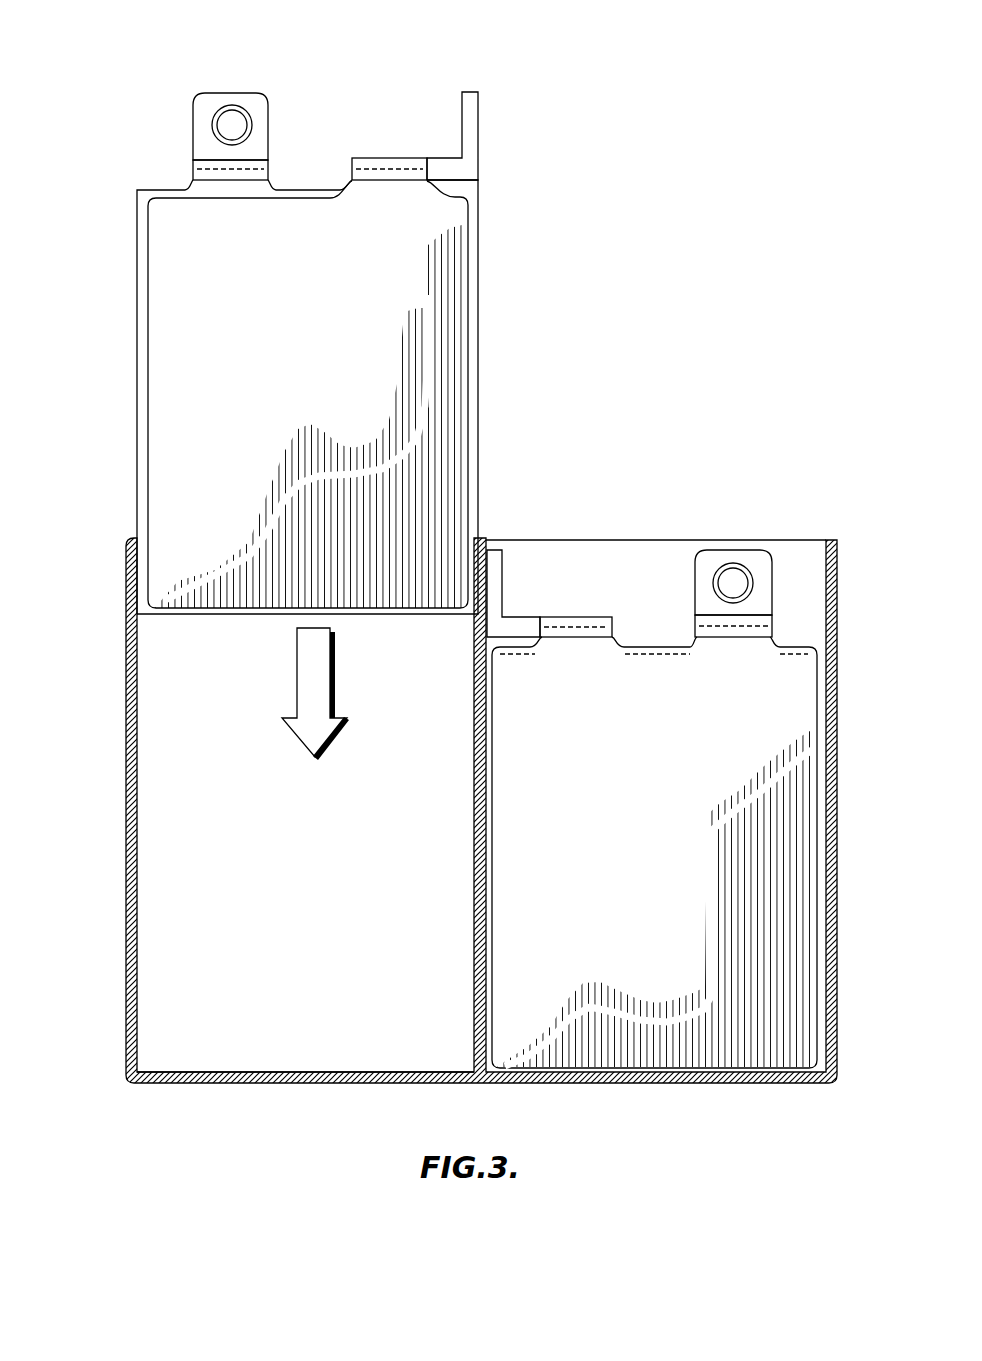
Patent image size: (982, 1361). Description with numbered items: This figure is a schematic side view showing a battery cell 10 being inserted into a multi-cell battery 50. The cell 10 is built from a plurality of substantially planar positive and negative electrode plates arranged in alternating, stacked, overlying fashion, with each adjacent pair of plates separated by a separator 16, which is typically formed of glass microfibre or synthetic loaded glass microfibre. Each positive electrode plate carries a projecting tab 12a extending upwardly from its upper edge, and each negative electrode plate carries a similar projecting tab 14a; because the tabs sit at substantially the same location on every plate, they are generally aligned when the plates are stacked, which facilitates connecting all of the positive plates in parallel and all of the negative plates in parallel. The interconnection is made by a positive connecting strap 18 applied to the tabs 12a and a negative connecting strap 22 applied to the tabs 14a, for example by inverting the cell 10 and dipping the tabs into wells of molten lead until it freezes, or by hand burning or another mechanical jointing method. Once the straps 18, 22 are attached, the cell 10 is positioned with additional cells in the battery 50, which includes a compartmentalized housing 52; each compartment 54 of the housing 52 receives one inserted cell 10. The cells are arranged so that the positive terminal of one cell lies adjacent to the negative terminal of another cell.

The battery cell 10 is at (339, 307).
The projecting tab 12a is at (393, 192).
The projecting tab 14a is at (292, 182).
The separator 16 is at (163, 197).
The positive connecting strap 18 is at (418, 158).
The negative connecting strap 22 is at (192, 162).
The multi-cell battery 50 is at (150, 1145).
The compartmentalized housing 52 is at (286, 1083).
The compartment 54 is at (178, 963).